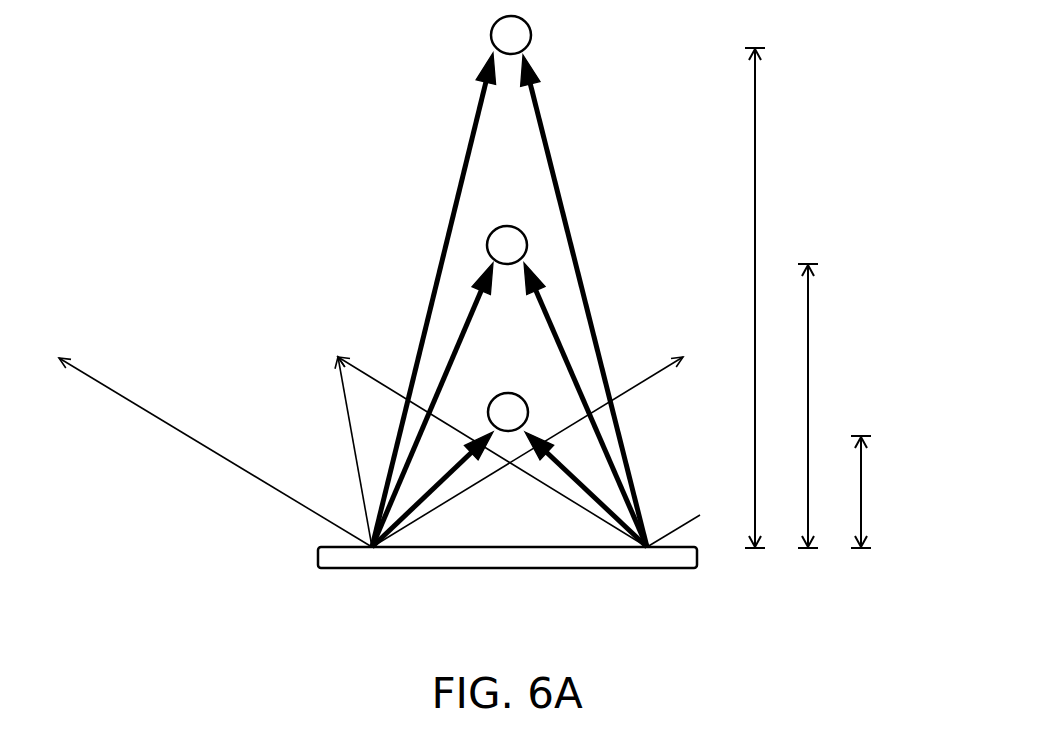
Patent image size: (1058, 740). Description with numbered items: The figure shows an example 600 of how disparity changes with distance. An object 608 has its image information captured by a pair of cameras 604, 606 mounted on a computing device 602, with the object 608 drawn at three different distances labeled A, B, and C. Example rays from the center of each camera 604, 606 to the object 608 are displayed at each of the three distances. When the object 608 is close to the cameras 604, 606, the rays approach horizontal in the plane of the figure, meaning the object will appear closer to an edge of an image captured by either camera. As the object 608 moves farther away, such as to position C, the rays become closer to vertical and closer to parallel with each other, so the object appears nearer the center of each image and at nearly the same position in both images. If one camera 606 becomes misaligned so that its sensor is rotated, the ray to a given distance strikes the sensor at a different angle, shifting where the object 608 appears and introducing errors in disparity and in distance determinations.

The example 600 is at (866, 88).
The computing device 602 is at (318, 560).
The camera 604 is at (372, 568).
The camera 606 is at (648, 568).
The object 608 is at (501, 433).